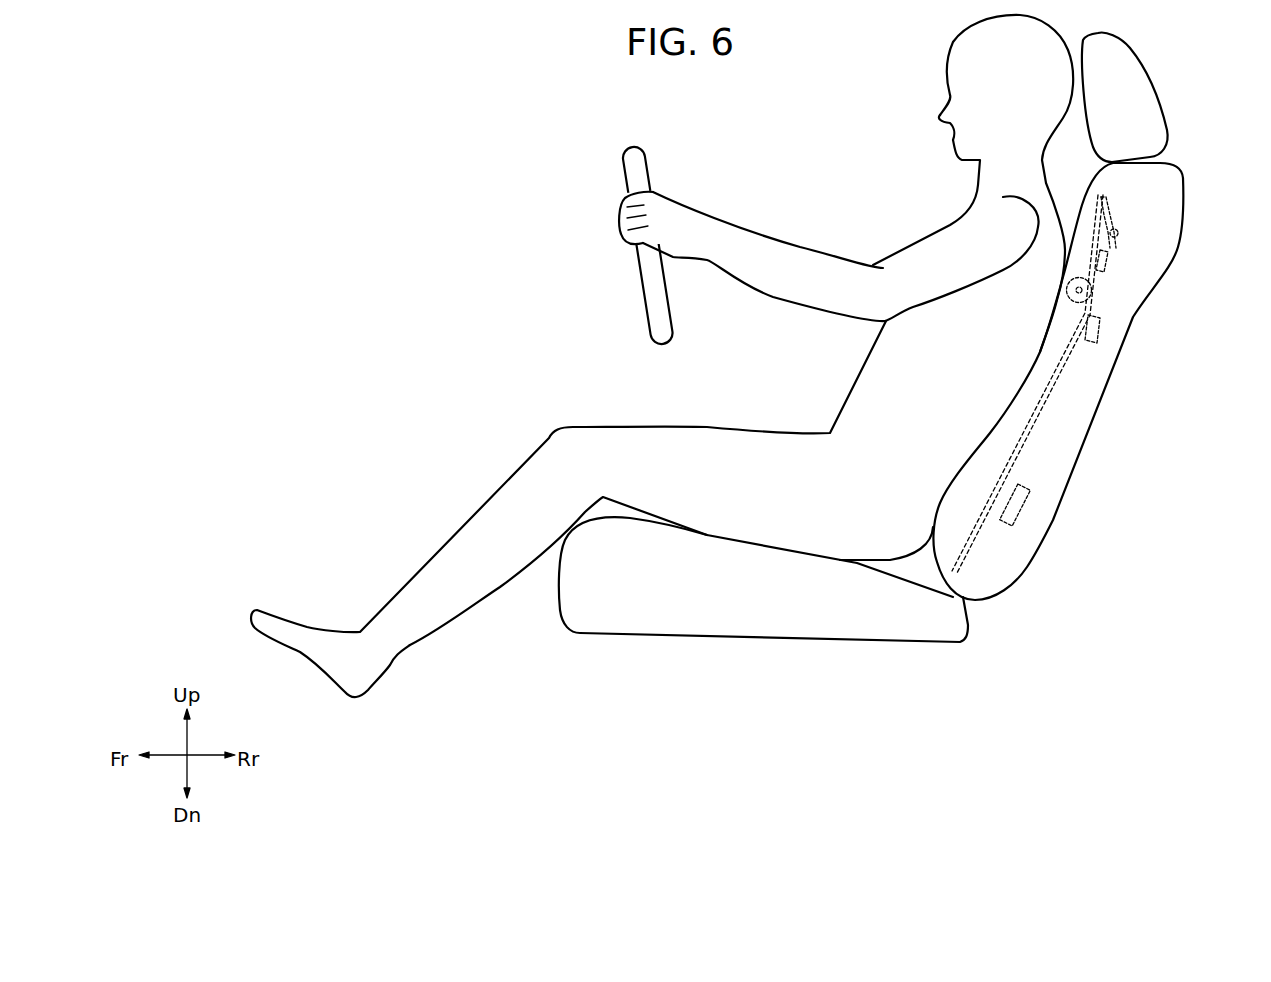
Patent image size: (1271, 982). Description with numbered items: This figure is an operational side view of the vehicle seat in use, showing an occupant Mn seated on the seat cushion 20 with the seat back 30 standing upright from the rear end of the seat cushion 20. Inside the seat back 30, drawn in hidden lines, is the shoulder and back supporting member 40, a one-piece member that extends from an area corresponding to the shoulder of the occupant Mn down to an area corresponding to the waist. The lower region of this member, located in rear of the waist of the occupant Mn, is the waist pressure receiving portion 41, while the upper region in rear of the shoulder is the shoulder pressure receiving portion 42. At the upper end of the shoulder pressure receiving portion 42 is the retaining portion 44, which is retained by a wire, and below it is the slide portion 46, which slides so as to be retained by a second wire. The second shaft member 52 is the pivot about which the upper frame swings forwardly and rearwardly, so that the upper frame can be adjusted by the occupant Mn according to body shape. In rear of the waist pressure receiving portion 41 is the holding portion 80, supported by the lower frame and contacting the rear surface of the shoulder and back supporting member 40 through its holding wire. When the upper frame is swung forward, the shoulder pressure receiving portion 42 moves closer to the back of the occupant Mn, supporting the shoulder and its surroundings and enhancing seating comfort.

The occupant Mn is at (558, 463).
The seat cushion 20 is at (766, 655).
The seat back 30 is at (1035, 587).
The shoulder and back supporting member 40 is at (1091, 394).
The waist pressure receiving portion 41 is at (1047, 428).
The shoulder pressure receiving portion 42 is at (1115, 260).
The retaining portion 44 is at (1144, 229).
The slide portion 46 is at (1104, 336).
The second shaft member 52 is at (1092, 279).
The holding portion 80 is at (1037, 507).